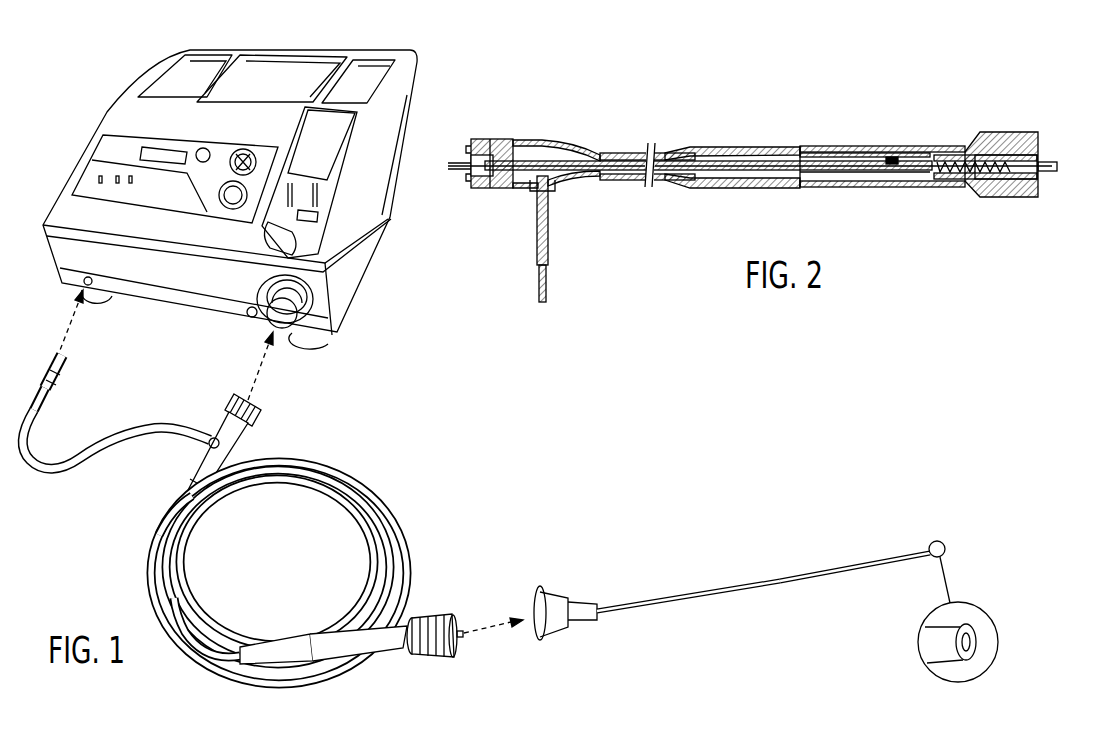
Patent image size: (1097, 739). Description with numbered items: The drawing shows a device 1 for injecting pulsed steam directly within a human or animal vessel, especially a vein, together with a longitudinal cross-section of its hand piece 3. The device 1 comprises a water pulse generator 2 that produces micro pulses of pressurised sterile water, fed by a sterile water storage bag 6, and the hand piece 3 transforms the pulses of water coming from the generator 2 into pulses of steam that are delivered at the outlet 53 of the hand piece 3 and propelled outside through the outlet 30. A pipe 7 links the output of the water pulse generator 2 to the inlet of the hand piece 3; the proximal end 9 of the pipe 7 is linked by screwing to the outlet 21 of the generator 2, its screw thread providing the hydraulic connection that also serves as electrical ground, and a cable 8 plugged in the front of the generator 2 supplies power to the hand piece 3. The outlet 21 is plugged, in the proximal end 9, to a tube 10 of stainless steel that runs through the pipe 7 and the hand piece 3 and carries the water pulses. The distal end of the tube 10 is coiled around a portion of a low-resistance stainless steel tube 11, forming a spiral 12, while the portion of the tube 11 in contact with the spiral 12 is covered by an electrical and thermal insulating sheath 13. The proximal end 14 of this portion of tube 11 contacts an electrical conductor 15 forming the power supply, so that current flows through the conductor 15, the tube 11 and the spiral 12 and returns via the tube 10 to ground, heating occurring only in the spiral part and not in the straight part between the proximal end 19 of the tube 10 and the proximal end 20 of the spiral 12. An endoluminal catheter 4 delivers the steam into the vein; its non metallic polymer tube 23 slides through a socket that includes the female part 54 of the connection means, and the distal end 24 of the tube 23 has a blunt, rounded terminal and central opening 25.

In FIG. 1, the device 1 is at (510, 448).
In FIG. 1, the water pulse generator 2 is at (246, 220).
In FIG. 1, the outlet of the water pulse generator 21 is at (317, 308).
In FIG. 2, the outlet of the water pulse generator 21 is at (458, 170).
In FIG. 1, the hand piece 3 is at (406, 617).
In FIG. 1, the endoluminal catheter 4 is at (730, 573).
In FIG. 1, the outlet of the hand piece 53 is at (474, 642).
In FIG. 1, the female part of the connection means 54 is at (563, 578).
In FIG. 1, the sterile water storage bag 6 is at (327, 143).
In FIG. 2, the sterile water storage bag 6 is at (613, 152).
In FIG. 1, the pipe 7 is at (343, 477).
In FIG. 2, the pipe 7 is at (663, 188).
In FIG. 1, the cable 8 is at (88, 460).
In FIG. 2, the cable 8 is at (537, 237).
In FIG. 1, the proximal end of the pipe 9 is at (223, 412).
In FIG. 2, the proximal end of the pipe 9 is at (546, 131).
In FIG. 2, the tube 10 is at (675, 157).
In FIG. 2, the stainless steel tube 11 is at (970, 183).
In FIG. 2, the spiral 12 is at (997, 177).
In FIG. 2, the electrical and thermal insulating sheath 13 is at (943, 178).
In FIG. 2, the proximal end of the portion of the tube 14 is at (930, 168).
In FIG. 2, the electrical conductor 15 is at (547, 282).
In FIG. 2, the proximal end of the tube 19 is at (498, 138).
In FIG. 2, the proximal end of the spiral 20 is at (913, 157).
In FIG. 1, the non metallic polymer tube 23 is at (817, 577).
In FIG. 1, the distal end of the tube 24 is at (940, 543).
In FIG. 1, the terminal and central opening 25 is at (920, 643).
In FIG. 2, the outlet of the hand piece 30 is at (1053, 160).